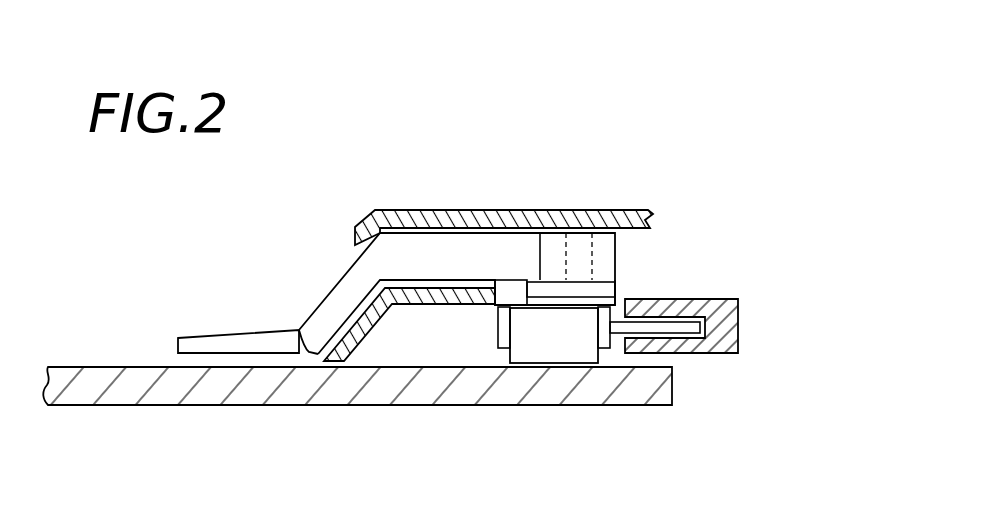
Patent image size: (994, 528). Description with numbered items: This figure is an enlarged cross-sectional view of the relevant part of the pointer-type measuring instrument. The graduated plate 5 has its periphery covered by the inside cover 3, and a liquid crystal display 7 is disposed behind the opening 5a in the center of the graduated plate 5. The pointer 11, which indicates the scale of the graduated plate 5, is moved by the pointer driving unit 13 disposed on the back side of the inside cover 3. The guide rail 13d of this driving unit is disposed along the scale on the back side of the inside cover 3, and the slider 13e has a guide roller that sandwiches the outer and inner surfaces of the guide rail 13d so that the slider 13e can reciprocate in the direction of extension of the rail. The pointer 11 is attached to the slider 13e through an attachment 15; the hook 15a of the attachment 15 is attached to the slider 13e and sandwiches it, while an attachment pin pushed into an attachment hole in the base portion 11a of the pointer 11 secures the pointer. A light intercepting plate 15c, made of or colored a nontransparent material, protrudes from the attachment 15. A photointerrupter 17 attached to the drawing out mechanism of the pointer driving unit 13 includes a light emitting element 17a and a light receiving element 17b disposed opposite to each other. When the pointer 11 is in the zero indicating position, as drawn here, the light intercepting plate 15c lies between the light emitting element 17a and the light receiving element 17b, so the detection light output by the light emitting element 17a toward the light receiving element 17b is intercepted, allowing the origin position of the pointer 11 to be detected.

The inside cover 3 is at (547, 220).
The graduated plate 5 is at (335, 332).
The opening 5a is at (312, 354).
The liquid crystal display 7 is at (150, 393).
The pointer 11 is at (228, 342).
The base portion 11a is at (620, 262).
The pointer driving unit 13 is at (452, 345).
The guide rail 13d is at (550, 349).
The slider 13e is at (503, 275).
The attachment 15 is at (557, 273).
The hook 15a is at (620, 288).
The light intercepting plate 15c is at (687, 332).
The photointerrupter 17 is at (750, 318).
The light emitting element 17a is at (713, 300).
The light receiving element 17b is at (693, 354).